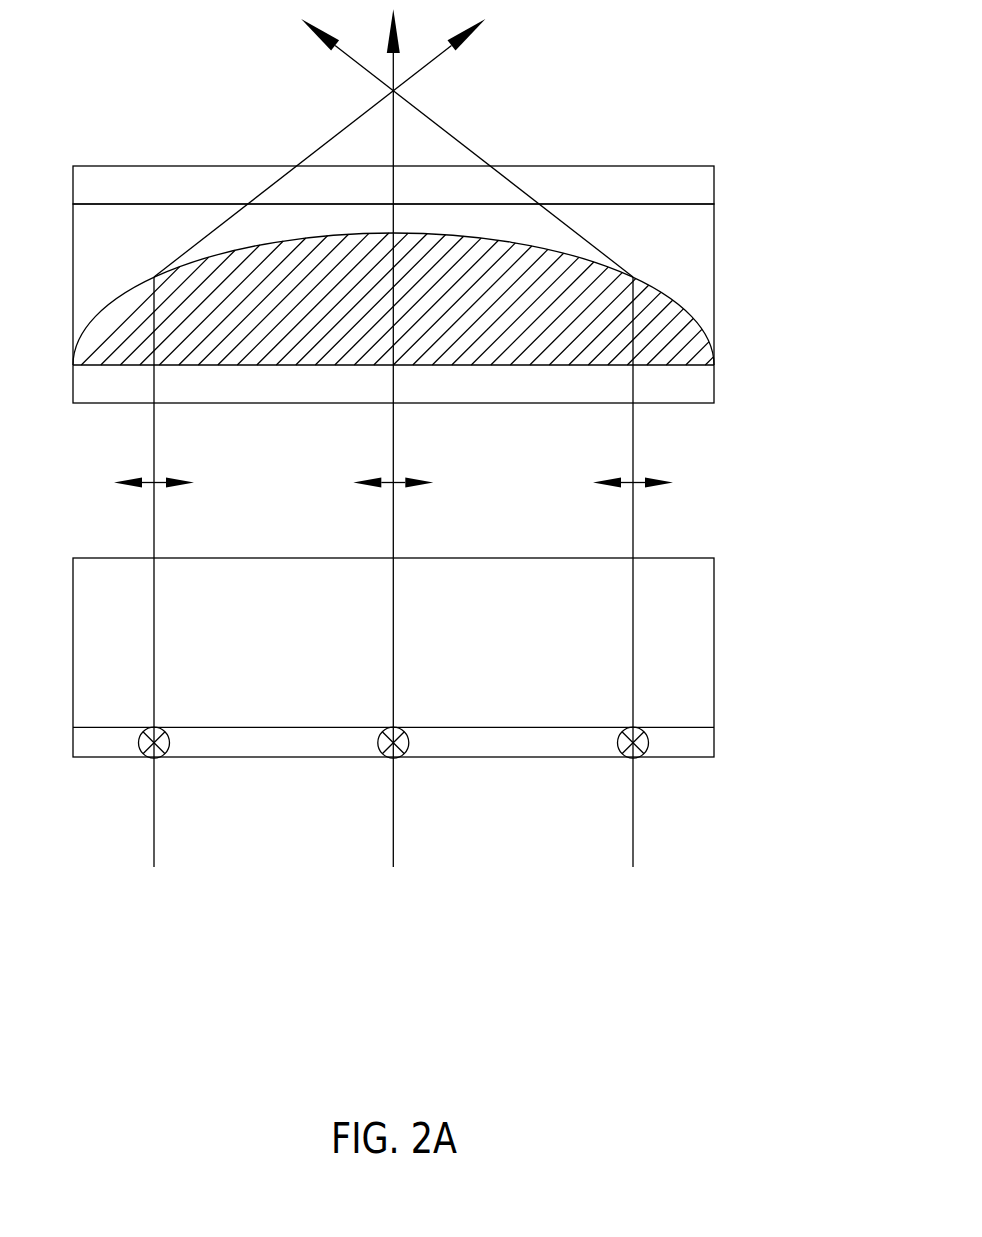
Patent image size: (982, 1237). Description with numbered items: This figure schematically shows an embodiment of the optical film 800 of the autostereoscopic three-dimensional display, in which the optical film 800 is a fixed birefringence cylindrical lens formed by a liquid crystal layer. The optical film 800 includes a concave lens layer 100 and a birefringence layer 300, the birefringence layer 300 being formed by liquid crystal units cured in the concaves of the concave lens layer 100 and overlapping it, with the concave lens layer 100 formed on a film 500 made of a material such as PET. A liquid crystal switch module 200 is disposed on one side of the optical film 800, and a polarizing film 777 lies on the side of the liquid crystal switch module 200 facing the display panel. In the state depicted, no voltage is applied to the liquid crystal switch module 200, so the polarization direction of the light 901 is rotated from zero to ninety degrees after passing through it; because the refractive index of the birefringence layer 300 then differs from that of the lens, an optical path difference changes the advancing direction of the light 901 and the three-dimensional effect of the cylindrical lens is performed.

The concave lens layer 100 is at (705, 242).
The liquid crystal switch module 200 is at (701, 645).
The birefringence layer 300 is at (690, 326).
The film 500 is at (701, 185).
The polarizing film 777 is at (701, 746).
The optical film 800 is at (450, 303).
The light 901 is at (633, 818).